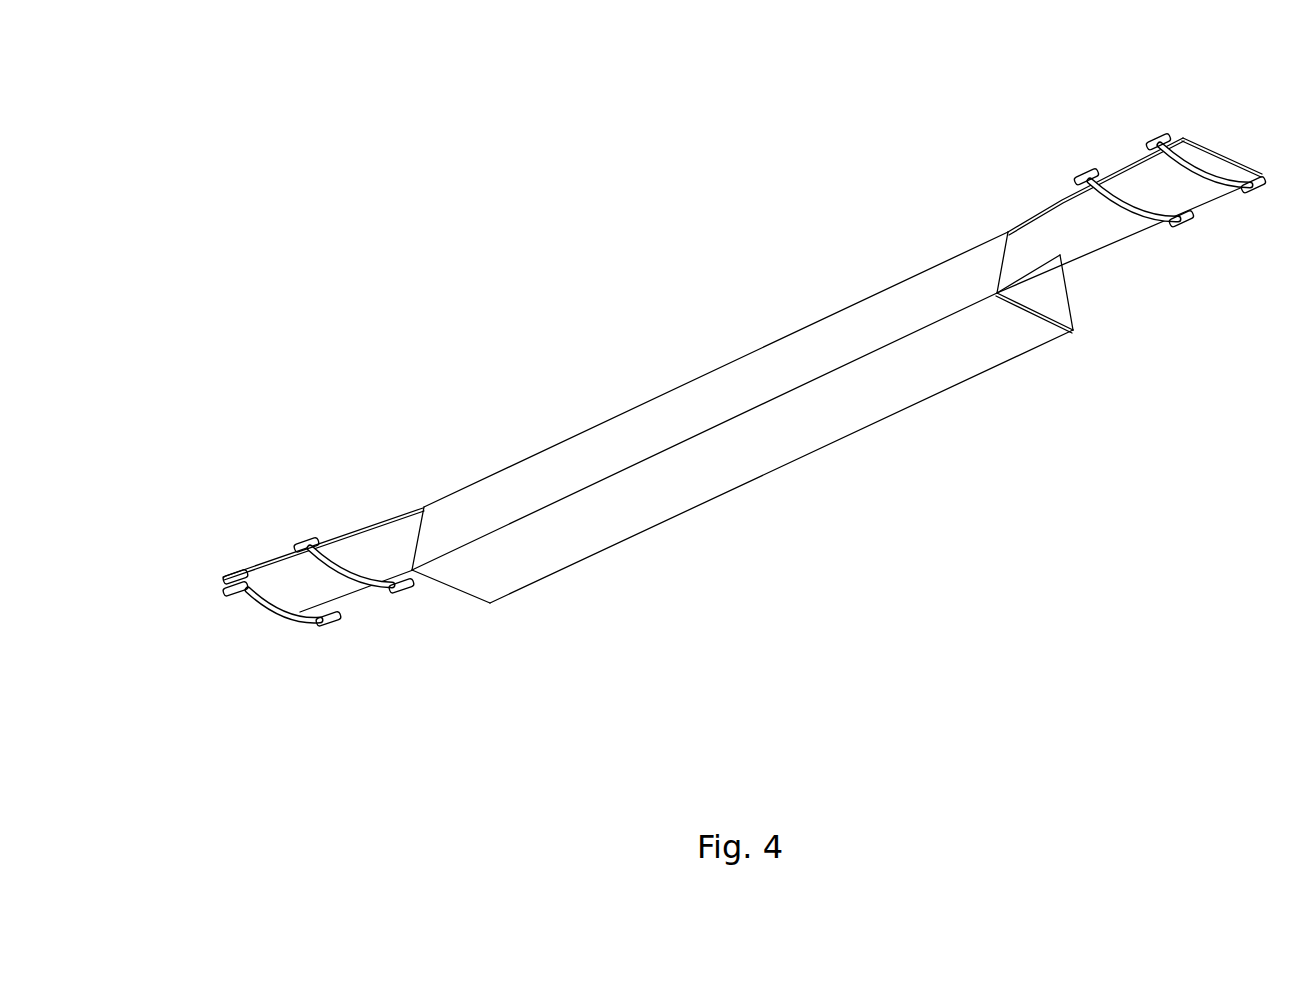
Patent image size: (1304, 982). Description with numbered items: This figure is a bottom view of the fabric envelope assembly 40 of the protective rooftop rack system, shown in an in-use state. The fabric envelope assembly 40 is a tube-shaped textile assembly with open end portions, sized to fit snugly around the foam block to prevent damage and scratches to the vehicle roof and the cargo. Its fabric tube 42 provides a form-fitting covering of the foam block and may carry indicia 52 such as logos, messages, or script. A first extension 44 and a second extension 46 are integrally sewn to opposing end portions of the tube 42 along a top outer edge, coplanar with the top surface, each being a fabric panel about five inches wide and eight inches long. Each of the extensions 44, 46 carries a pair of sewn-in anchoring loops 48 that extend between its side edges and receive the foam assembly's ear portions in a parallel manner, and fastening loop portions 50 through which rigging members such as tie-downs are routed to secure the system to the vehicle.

The fabric envelope assembly 40 is at (264, 130).
The fabric tube 42 is at (875, 328).
The first extension 44 is at (377, 555).
The second extension 46 is at (1203, 163).
The anchoring loops 48 is at (343, 572).
The fastening loop portions 50 is at (312, 547).
The indicia 52 is at (698, 402).